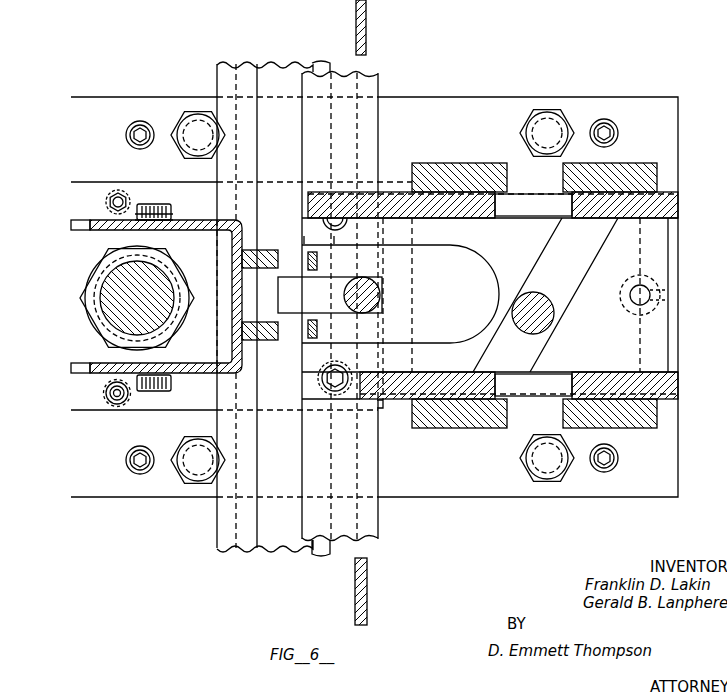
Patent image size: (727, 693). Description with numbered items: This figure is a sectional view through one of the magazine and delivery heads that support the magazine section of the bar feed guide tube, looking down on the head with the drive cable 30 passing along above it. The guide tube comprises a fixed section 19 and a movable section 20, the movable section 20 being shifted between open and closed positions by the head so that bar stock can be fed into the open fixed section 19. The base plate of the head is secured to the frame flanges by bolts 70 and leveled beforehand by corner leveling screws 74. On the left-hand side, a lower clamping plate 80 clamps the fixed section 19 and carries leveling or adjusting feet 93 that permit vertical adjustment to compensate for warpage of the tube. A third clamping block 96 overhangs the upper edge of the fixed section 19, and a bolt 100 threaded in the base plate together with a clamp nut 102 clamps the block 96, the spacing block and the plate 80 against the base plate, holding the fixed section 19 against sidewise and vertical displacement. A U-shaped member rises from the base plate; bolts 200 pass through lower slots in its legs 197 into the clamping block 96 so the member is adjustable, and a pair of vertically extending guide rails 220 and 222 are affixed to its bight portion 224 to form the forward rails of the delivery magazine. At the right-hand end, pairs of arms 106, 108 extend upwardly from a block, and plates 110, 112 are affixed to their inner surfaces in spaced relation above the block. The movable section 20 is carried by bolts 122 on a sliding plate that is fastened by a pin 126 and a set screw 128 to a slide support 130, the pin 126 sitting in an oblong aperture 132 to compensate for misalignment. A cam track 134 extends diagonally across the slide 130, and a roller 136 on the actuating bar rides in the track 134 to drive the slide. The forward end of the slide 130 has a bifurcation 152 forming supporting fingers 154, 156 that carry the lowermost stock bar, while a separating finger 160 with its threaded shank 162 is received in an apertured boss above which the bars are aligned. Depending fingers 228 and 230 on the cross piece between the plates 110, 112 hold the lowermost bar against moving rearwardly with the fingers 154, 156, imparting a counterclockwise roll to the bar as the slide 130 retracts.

The fixed section 19 is at (217, 76).
The movable section 20 is at (380, 133).
The drive cable 30 is at (366, 38).
The bolts 70 is at (182, 127).
The corner leveling screws 74 is at (128, 131).
The lower clamping plate 80 is at (171, 194).
The leveling or adjusting feet 93 is at (118, 190).
The third clamping block 96 is at (208, 248).
The bolt 100 is at (104, 275).
The clamp nut 102 is at (108, 345).
The arms 106 is at (470, 162).
The arms 108 is at (625, 162).
The plate 110 is at (402, 402).
The plate 112 is at (394, 192).
The bolts 122 is at (320, 224).
The pin 126 is at (630, 305).
The set screw 128 is at (671, 288).
The slide support 130 is at (530, 241).
The oblong aperture 132 is at (653, 256).
The cam track 134 is at (578, 284).
The roller 136 is at (510, 331).
The bifurcation 152 is at (492, 278).
The supporting finger 154 is at (319, 237).
The supporting finger 156 is at (350, 351).
The separating finger 160 is at (332, 296).
The threaded shank 162 is at (383, 290).
The legs 197 is at (185, 375).
The bolts 200 is at (178, 209).
The guide rail 220 is at (267, 340).
The guide rail 222 is at (263, 250).
The bight portion 224 is at (230, 310).
The depending finger 228 is at (318, 333).
The depending finger 230 is at (318, 263).